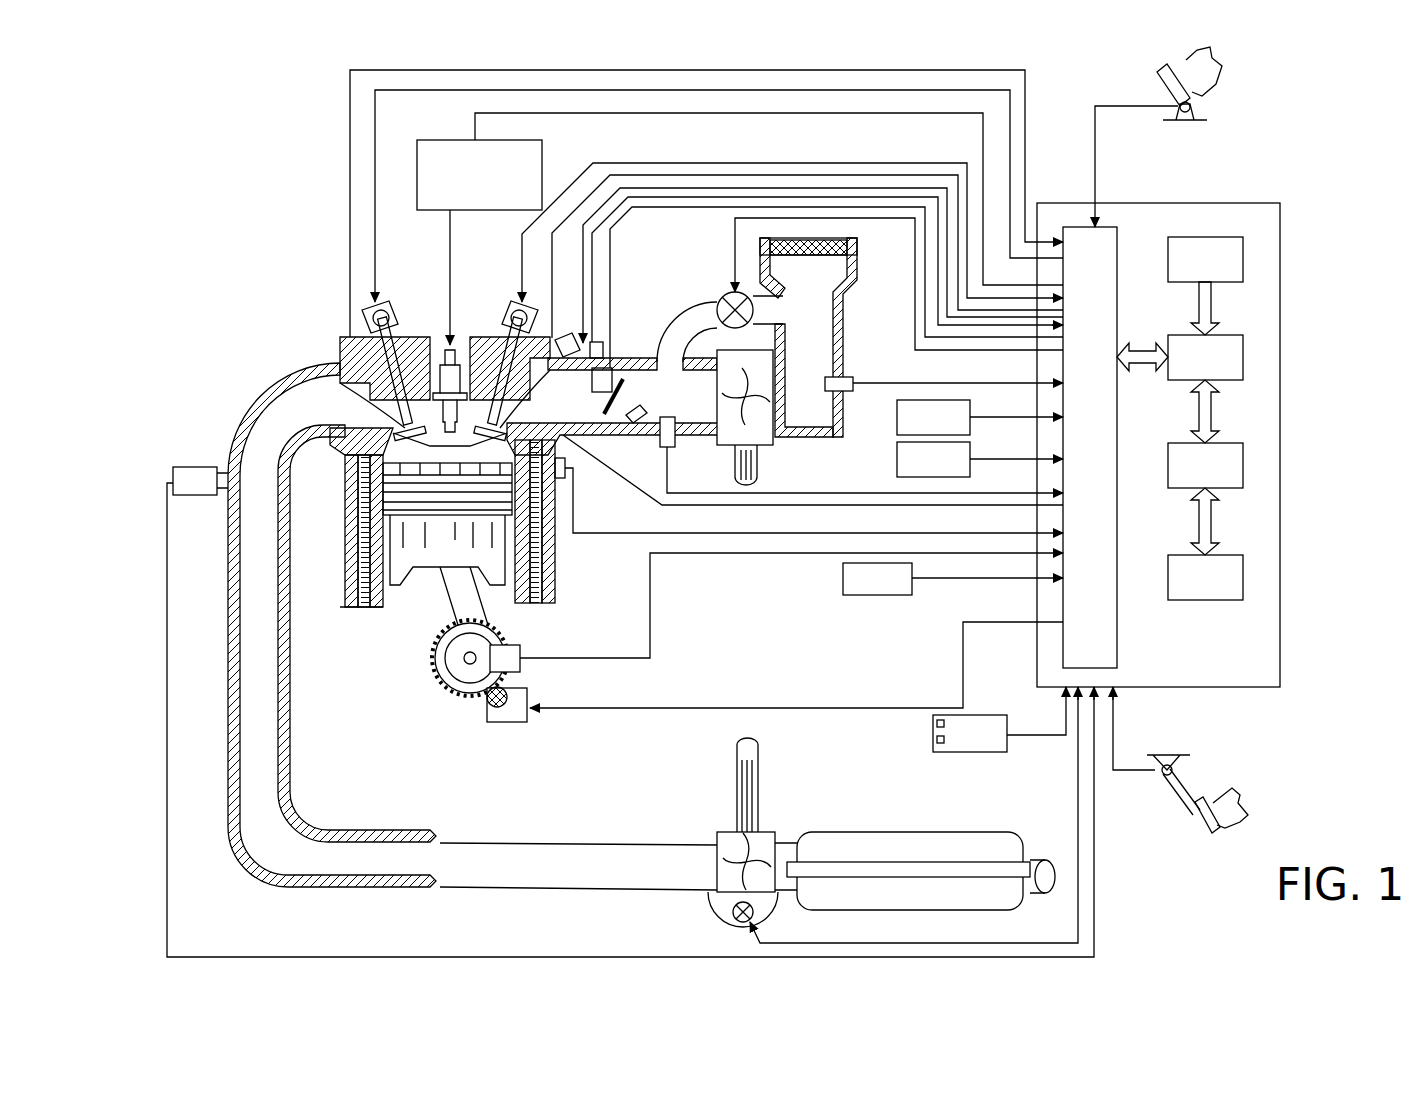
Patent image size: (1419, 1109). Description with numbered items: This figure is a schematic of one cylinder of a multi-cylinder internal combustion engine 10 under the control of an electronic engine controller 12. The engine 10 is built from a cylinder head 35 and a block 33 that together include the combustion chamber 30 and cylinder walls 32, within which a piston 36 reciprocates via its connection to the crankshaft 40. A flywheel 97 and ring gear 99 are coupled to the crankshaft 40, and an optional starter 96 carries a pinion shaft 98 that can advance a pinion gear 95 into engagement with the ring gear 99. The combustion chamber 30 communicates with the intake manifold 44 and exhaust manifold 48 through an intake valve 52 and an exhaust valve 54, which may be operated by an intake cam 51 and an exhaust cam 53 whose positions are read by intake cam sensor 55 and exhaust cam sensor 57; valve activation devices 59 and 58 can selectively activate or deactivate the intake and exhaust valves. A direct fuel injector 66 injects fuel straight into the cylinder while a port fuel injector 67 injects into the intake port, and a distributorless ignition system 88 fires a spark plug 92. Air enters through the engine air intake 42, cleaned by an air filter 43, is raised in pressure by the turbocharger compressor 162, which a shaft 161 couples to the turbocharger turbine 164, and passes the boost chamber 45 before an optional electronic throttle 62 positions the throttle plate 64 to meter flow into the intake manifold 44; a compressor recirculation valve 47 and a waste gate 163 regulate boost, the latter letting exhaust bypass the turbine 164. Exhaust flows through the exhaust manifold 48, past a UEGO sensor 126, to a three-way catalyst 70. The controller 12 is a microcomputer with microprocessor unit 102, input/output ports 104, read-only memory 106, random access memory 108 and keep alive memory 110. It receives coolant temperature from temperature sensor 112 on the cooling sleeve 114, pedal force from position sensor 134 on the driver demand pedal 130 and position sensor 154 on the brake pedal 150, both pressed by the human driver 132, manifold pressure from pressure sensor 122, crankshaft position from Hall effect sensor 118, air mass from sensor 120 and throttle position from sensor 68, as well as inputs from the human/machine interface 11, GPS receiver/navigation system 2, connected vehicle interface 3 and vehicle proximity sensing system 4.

The GPS receiver/navigation system 2 is at (980, 417).
The connected vehicle interface 3 is at (980, 459).
The vehicle proximity sensing system 4 is at (970, 733).
The internal combustion engine 10 is at (272, 290).
The human/machine interface 11 is at (953, 579).
The electronic engine controller 12 is at (1283, 205).
The combustion chamber 30 is at (345, 568).
The cylinder walls 32 is at (383, 605).
The block 33 is at (337, 489).
The cylinder head 35 is at (340, 335).
The piston 36 is at (432, 575).
The crankshaft 40 is at (460, 688).
The engine air intake 42 is at (675, 265).
The air filter 43 is at (828, 258).
The intake manifold 44 is at (560, 412).
The boost chamber 45 is at (664, 412).
The compressor recirculation valve 47 is at (722, 300).
The exhaust manifold 48 is at (320, 418).
The intake cam 51 is at (520, 298).
The intake valve 52 is at (495, 395).
The exhaust cam 53 is at (377, 300).
The exhaust valve 54 is at (380, 402).
The intake cam sensor 55 is at (538, 318).
The exhaust cam sensor 57 is at (367, 310).
The valve activation device 58 is at (389, 320).
The valve activation device 59 is at (512, 320).
The electronic throttle 62 is at (616, 395).
The throttle plate 64 is at (642, 416).
The direct fuel injector 66 is at (567, 472).
The port fuel injector 67 is at (580, 343).
The throttle position sensor 68 is at (605, 358).
The three-way catalyst 70 is at (838, 832).
The distributorless ignition system 88 is at (542, 158).
The spark plug 92 is at (453, 340).
The pinion gear 95 is at (510, 722).
The starter 96 is at (520, 720).
The flywheel 97 is at (437, 660).
The pinion shaft 98 is at (480, 718).
The ring gear 99 is at (475, 700).
The microprocessor unit 102 is at (1245, 358).
The input/output ports 104 is at (1120, 232).
The read-only memory 106 is at (1245, 262).
The random access memory 108 is at (1245, 465).
The keep alive memory 110 is at (1245, 578).
The temperature sensor 112 is at (574, 520).
The cooling sleeve 114 is at (558, 575).
The Hall effect sensor 118 is at (520, 652).
The air mass sensor 120 is at (850, 378).
The pressure sensor 122 is at (665, 448).
The Universal Exhaust Gas Oxygen (UEGO) sensor 126 is at (173, 467).
The driver demand pedal 130 is at (1160, 80).
The human driver 132 is at (1225, 66).
The position sensor 134 is at (1200, 112).
The brake pedal 150 is at (1190, 815).
The position sensor 154 is at (1160, 764).
The shaft 161 is at (735, 470).
The turbocharger compressor 162 is at (762, 440).
The waste gate 163 is at (736, 918).
The turbocharger turbine 164 is at (720, 832).